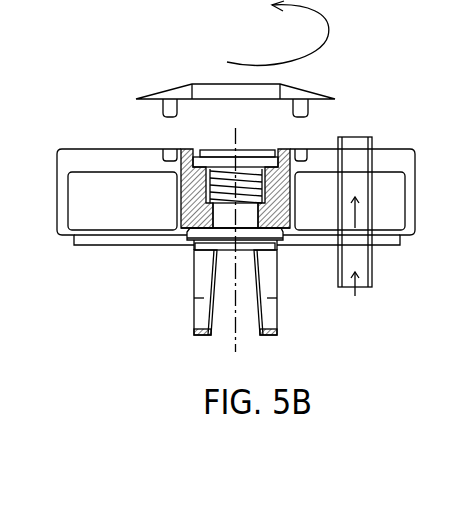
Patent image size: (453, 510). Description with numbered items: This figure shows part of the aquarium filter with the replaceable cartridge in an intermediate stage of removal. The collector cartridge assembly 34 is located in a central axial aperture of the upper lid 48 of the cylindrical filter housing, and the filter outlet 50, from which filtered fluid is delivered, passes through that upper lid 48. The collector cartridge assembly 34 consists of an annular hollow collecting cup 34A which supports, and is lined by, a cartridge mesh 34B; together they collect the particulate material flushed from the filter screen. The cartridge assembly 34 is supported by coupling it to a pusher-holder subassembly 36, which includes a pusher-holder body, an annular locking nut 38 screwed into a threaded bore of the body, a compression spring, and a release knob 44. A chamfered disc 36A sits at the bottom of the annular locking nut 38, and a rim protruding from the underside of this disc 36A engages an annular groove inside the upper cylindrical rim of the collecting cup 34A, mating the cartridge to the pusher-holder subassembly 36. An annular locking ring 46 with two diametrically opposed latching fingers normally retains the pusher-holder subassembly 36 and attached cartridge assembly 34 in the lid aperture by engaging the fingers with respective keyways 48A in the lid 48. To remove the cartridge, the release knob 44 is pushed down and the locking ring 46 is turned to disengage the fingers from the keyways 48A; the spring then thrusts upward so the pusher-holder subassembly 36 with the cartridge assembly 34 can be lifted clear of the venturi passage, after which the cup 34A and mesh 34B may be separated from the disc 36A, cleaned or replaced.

The collector cartridge assembly 34 is at (132, 275).
The hollow collecting cup 34A is at (202, 317).
The cartridge mesh 34B is at (280, 270).
The pusher-holder subassembly 36 is at (287, 233).
The chamfered disc 36A is at (202, 235).
The annular locking nut 38 is at (270, 214).
The release knob 44 is at (225, 157).
The annular locking ring 46 is at (192, 84).
The upper lid 48 is at (123, 148).
The keyways 48A is at (166, 148).
The filter outlet 50 is at (370, 137).